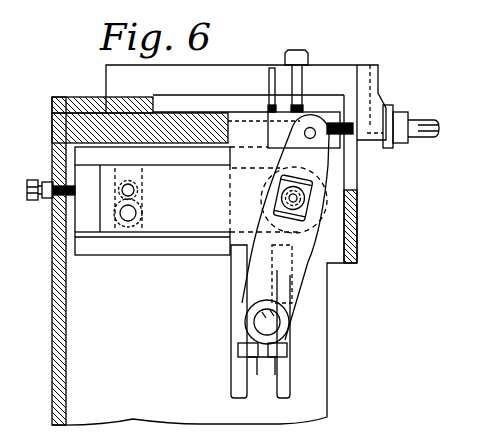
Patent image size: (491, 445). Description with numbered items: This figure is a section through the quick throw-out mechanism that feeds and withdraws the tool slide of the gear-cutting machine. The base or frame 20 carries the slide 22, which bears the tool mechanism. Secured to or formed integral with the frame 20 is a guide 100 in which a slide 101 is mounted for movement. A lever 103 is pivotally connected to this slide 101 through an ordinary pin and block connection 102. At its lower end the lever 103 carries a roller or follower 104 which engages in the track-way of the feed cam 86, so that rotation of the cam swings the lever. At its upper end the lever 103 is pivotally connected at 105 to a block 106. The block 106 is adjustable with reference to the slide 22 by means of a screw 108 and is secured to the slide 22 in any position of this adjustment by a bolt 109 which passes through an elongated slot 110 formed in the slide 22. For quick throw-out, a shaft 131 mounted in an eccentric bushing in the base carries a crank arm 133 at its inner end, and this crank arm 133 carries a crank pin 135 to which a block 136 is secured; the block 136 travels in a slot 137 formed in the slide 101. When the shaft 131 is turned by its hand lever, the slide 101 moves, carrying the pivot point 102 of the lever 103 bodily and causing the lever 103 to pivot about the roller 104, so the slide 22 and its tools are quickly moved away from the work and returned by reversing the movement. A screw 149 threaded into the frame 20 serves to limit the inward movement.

The base or frame 20 is at (65, 361).
The slide 22 is at (343, 70).
The cam 86 is at (287, 382).
The guide 100 is at (127, 249).
The slide 101 is at (258, 163).
The pin and block connection 102 is at (297, 207).
The lever 103 is at (306, 272).
The roller or follower 104 is at (257, 322).
The pivot 105 is at (312, 140).
The block 106 is at (278, 142).
The screw 108 is at (427, 120).
The bolt 109 is at (305, 50).
The elongated slot 110 is at (277, 77).
The shaft 131 is at (144, 215).
The crank arm 133 is at (144, 191).
The crank pin 135 is at (128, 167).
The block 136 is at (115, 199).
The slot 137 is at (144, 170).
The screw 149 is at (62, 202).